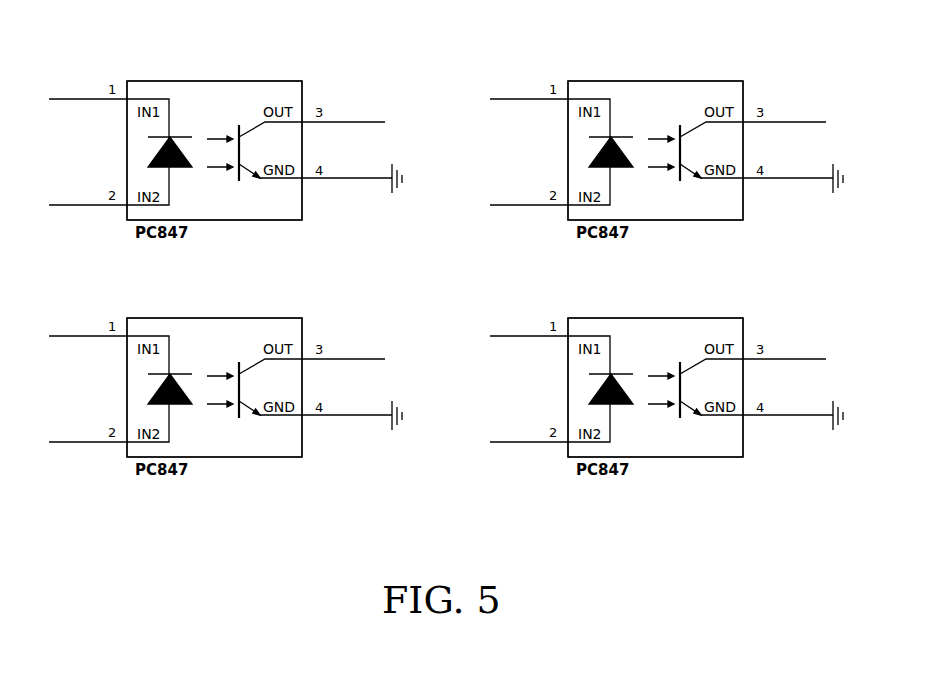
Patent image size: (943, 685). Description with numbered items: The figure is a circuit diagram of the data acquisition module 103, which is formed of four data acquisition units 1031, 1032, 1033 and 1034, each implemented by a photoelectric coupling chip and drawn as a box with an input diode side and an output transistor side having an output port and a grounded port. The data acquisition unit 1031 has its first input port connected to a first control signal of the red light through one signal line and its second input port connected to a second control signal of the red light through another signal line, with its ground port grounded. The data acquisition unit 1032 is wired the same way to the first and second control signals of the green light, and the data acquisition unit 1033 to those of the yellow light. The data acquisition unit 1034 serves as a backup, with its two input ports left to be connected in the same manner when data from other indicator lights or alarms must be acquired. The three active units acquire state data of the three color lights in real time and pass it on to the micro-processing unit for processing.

The data acquisition module 103 is at (64, 34).
The data acquisition unit 1031 is at (225, 152).
The data acquisition unit 1032 is at (666, 152).
The data acquisition unit 1033 is at (225, 389).
The data acquisition unit 1034 is at (666, 389).